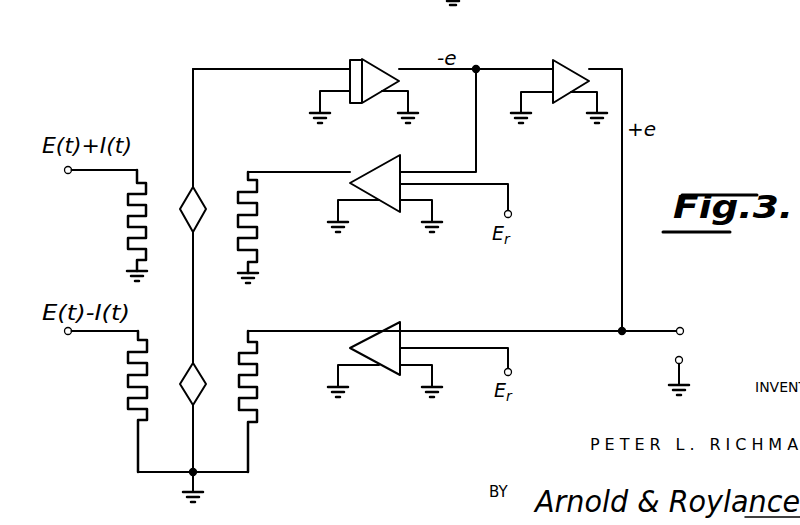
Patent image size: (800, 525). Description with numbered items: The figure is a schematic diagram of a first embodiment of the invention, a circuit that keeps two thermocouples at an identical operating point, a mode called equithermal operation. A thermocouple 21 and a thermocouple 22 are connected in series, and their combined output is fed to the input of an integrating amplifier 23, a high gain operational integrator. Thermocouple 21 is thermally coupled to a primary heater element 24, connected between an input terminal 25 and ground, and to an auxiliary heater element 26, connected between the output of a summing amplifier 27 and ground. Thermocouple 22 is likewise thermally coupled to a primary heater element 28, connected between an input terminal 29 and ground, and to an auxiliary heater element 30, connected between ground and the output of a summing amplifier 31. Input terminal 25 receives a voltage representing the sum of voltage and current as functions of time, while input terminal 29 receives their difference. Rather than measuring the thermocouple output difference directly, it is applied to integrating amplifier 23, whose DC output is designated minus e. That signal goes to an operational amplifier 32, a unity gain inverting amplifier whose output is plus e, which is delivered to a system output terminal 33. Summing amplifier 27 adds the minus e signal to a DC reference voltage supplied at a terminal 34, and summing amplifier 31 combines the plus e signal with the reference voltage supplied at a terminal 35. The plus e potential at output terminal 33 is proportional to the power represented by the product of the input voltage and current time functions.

The thermocouple 21 is at (193, 187).
The thermocouple 22 is at (193, 363).
The integrating amplifier 23 is at (370, 63).
The heater element 24 is at (128, 230).
The input terminal 25 is at (66, 174).
The heater element 26 is at (257, 213).
The summing amplifier 27 is at (388, 212).
The heater element 28 is at (128, 390).
The input terminal 29 is at (66, 335).
The heater element 30 is at (257, 376).
The summing amplifier 31 is at (388, 375).
The operational amplifier 32 is at (556, 62).
The system output terminal 33 is at (680, 327).
The terminal 34 is at (511, 211).
The terminal 35 is at (511, 369).